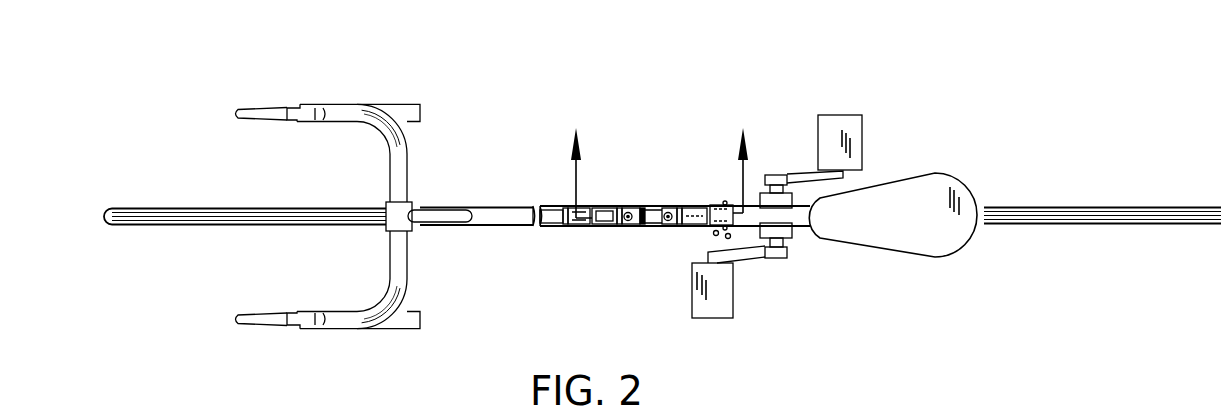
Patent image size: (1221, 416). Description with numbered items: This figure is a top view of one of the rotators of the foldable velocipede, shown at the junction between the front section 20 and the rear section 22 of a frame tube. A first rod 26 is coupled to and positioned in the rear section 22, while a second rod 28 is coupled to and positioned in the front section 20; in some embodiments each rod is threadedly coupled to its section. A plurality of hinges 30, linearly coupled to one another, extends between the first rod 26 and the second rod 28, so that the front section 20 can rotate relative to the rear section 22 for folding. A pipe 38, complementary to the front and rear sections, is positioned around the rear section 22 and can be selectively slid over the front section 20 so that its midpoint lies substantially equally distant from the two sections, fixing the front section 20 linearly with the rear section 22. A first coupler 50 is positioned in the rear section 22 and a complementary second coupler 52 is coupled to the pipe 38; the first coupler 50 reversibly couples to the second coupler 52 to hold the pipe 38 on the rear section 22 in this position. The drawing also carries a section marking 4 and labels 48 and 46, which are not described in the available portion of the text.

The front section 20 is at (492, 204).
The pipe 38 is at (548, 204).
The second rod 28 is at (607, 204).
The hinges 30 is at (632, 204).
The first rod 26 is at (693, 204).
The section line 4- 4 is at (660, 152).
The rear section 22 is at (756, 204).
The upper actuator arm 48 is at (884, 265).
The lower actuator arm 46 is at (1100, 415).
The first coupler 50 is at (711, 234).
The second coupler 52 is at (732, 240).